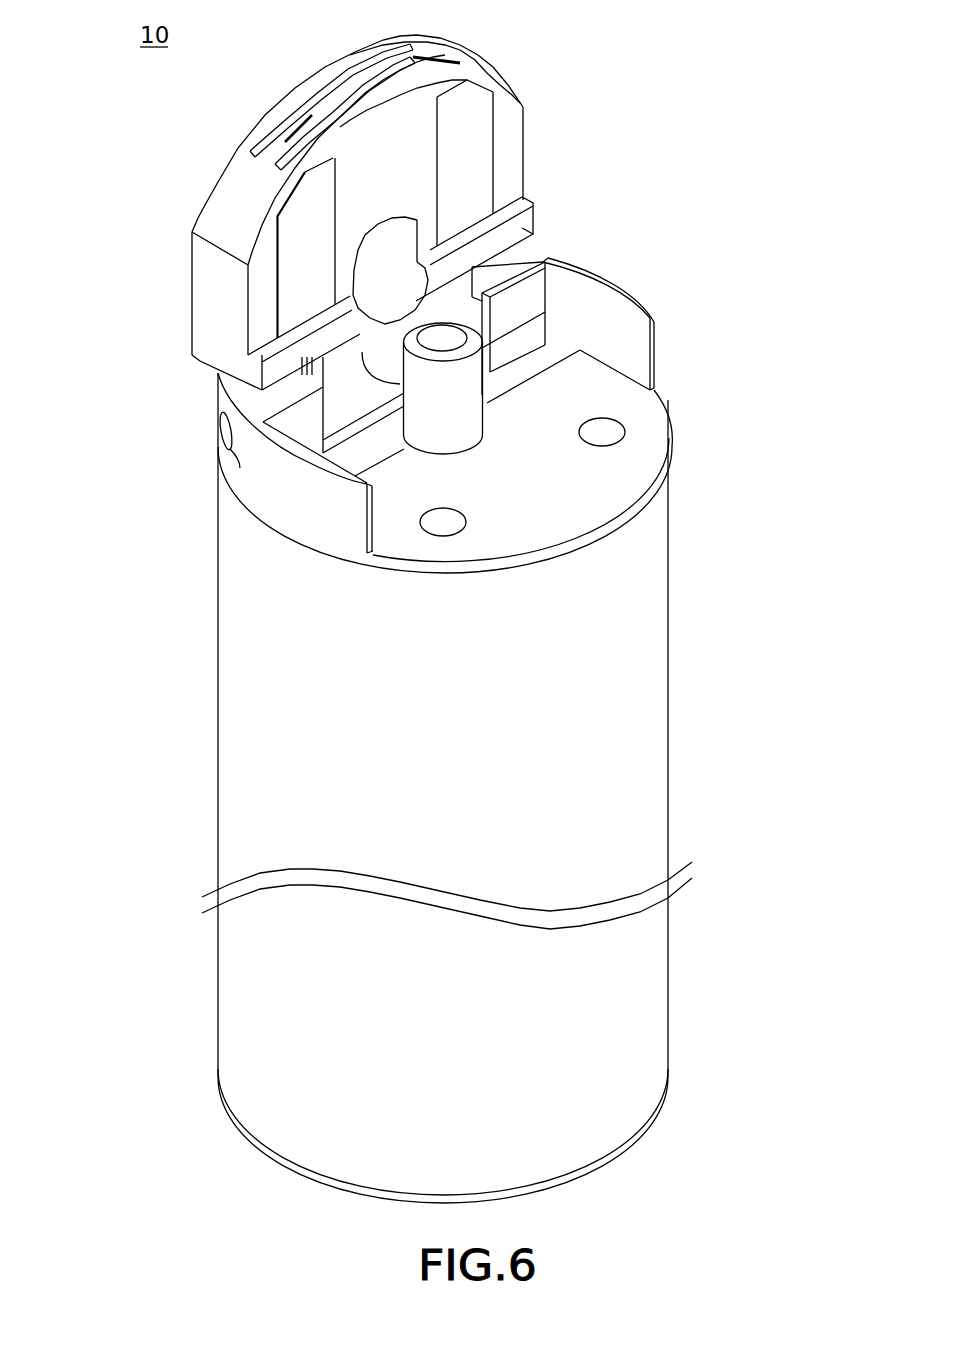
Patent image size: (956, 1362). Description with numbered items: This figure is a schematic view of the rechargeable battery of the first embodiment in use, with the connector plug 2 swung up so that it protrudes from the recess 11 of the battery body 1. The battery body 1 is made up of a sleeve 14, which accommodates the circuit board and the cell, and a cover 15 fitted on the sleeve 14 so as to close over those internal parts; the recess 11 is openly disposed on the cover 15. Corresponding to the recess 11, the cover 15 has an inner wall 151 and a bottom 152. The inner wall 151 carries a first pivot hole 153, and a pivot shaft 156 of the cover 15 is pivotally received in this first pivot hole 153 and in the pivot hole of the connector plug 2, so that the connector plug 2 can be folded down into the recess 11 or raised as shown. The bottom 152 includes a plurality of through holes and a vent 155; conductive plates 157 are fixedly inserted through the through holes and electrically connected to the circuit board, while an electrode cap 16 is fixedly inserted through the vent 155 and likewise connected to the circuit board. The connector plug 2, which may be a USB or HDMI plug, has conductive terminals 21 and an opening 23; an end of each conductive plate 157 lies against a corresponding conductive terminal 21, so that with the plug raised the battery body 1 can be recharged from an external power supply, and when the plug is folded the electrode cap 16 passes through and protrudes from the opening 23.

The battery body 1 is at (668, 655).
The connector plug 2 is at (385, 211).
The recess 11 is at (603, 319).
The sleeve 14 is at (622, 767).
The cover 15 is at (240, 390).
The electrode cap 16 is at (447, 343).
The conductive terminals 21 is at (468, 118).
The opening 23 is at (372, 272).
The inner wall 151 is at (617, 342).
The bottom 152 is at (560, 485).
The first pivot hole 153 is at (240, 468).
The vent 155 is at (563, 373).
The pivot shaft 156 is at (222, 431).
The conductive plates 157 is at (352, 384).